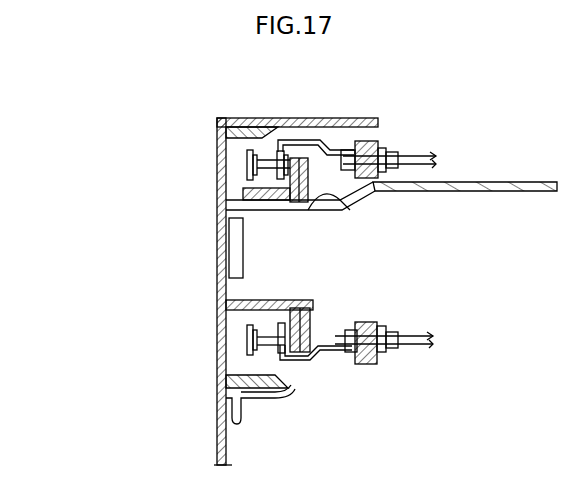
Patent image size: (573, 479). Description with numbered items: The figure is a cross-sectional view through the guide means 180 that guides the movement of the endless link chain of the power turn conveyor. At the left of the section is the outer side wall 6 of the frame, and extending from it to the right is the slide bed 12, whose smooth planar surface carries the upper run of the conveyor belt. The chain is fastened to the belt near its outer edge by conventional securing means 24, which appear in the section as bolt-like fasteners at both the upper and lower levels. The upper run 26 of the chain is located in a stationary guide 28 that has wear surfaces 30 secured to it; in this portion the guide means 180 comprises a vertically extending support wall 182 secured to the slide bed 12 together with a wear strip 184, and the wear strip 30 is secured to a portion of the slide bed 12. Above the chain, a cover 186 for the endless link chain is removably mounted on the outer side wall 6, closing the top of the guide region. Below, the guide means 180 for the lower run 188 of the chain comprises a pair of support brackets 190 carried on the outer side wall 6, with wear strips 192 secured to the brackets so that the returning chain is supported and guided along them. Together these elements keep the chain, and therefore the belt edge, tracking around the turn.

The outer side wall 6 is at (222, 330).
The slide bed 12 is at (418, 192).
The securing means 24 is at (395, 422).
The upper run 26 is at (246, 164).
The stationary guide 28 is at (125, 195).
The wear surface 30 is at (242, 197).
The guide means 180 is at (130, 318).
The support wall 182 is at (325, 190).
The wear strip 184 is at (300, 200).
The cover 186 is at (252, 118).
The lower run 188 is at (252, 343).
The support bracket 190 is at (270, 303).
The wear strip 192 is at (318, 322).